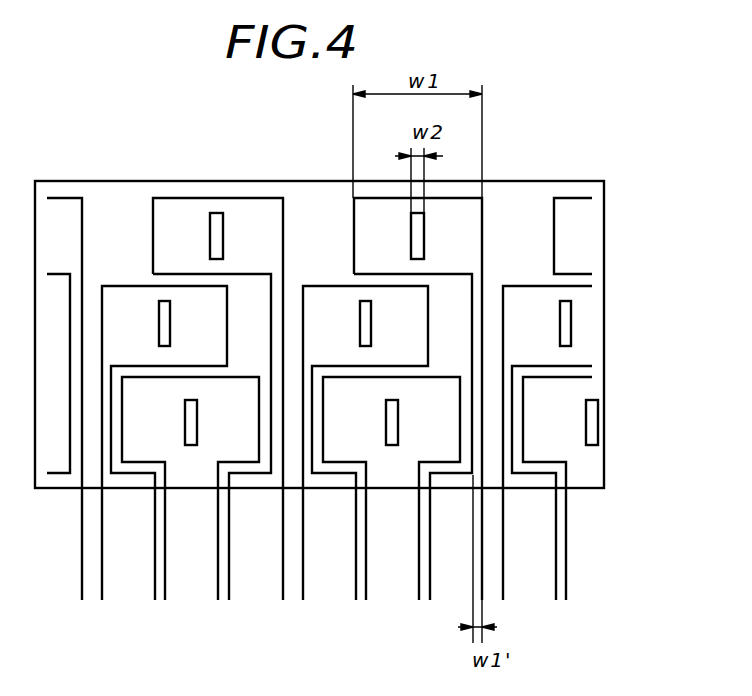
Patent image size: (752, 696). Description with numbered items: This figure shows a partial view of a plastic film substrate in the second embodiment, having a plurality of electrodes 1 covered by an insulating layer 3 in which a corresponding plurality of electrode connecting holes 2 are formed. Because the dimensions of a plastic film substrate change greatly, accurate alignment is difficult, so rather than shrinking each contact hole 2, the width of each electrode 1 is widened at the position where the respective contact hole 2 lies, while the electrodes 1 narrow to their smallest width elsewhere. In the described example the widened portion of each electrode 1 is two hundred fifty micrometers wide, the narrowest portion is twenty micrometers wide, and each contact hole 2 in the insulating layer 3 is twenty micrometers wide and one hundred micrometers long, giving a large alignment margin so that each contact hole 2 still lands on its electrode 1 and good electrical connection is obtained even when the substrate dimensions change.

The electrode 1 is at (460, 223).
The electrode connecting hole 2 is at (417, 228).
The insulating layer 3 is at (537, 200).